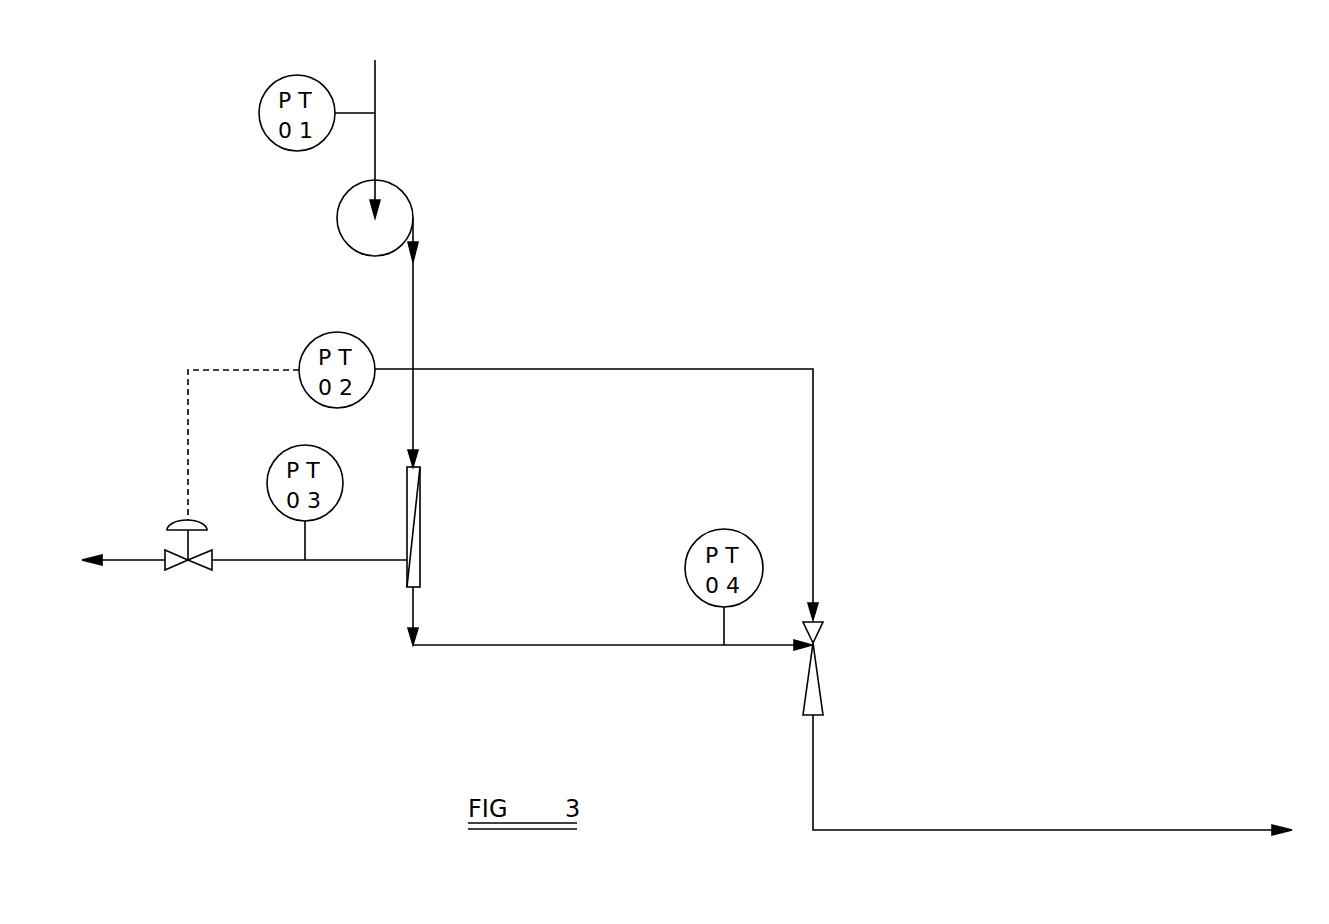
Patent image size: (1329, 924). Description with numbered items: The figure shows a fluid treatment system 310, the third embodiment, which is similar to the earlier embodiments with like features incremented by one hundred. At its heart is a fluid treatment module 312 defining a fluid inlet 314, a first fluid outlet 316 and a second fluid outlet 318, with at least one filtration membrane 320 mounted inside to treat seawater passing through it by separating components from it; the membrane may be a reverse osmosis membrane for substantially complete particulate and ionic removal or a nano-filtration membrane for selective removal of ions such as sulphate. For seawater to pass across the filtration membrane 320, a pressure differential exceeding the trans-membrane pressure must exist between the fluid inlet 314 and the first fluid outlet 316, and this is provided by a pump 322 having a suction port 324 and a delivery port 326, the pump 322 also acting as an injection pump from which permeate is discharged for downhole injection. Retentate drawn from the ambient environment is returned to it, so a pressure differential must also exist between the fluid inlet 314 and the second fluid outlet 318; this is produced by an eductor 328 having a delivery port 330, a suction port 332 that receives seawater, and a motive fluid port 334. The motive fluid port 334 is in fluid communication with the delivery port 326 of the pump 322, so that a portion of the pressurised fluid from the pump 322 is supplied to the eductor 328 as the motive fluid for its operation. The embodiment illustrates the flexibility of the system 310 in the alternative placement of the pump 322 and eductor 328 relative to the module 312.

The fluid treatment system 310 is at (945, 391).
The fluid treatment module 312 is at (407, 487).
The fluid inlet 314 is at (413, 462).
The first fluid outlet 316 is at (413, 588).
The second fluid outlet 318 is at (407, 562).
The filtration membrane 320 is at (412, 537).
The pump 322 is at (403, 188).
The suction port 324 is at (375, 175).
The delivery port 326 is at (417, 247).
The eductor 328 is at (818, 635).
The delivery port 330 is at (815, 717).
The suction port 332 is at (808, 650).
The motive fluid port 334 is at (817, 620).